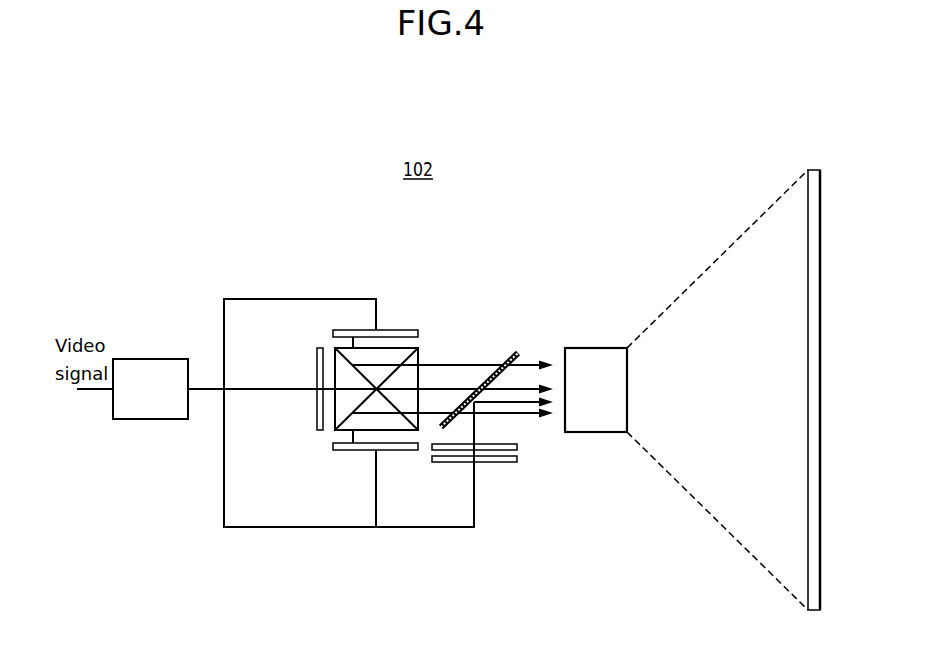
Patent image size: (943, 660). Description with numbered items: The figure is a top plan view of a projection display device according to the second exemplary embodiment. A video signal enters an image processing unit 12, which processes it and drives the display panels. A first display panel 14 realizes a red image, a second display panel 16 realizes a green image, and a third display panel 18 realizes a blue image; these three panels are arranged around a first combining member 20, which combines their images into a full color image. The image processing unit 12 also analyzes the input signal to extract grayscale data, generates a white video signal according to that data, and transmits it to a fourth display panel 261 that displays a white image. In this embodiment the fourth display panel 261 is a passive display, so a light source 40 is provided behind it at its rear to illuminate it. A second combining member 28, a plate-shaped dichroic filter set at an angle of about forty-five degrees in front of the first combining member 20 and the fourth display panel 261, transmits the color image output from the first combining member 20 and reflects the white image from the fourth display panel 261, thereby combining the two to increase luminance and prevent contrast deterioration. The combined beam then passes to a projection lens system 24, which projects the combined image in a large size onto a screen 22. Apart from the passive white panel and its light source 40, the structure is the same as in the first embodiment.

The image processing unit 12 is at (137, 399).
The first display panel 14 is at (398, 330).
The second display panel 16 is at (317, 368).
The third display panel 18 is at (349, 450).
The first combining member 20 is at (420, 357).
The screen 22 is at (812, 170).
The projection lens system 24 is at (597, 432).
The second combining member 28 is at (513, 351).
The light source 40 is at (448, 462).
The fourth display panel 261 is at (518, 447).